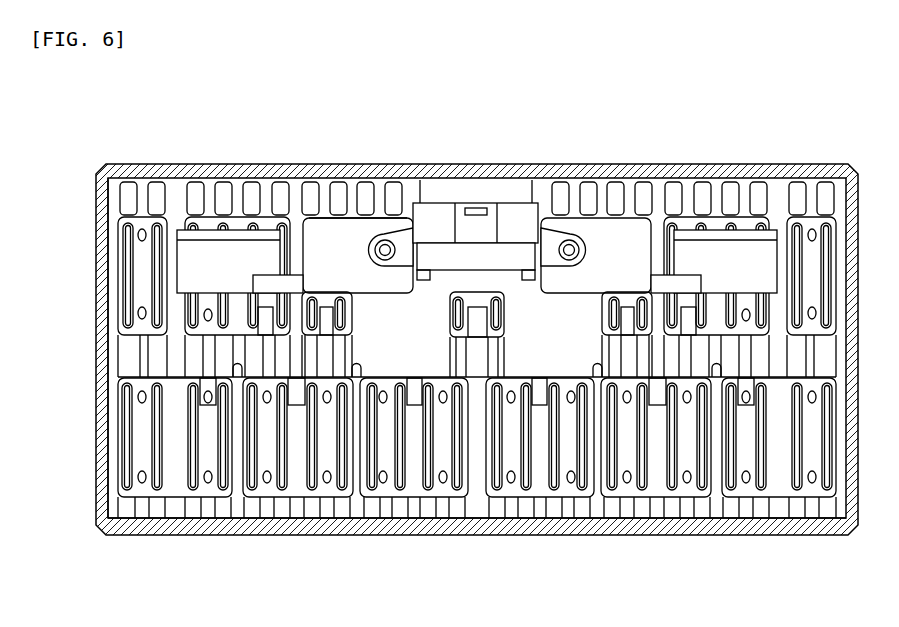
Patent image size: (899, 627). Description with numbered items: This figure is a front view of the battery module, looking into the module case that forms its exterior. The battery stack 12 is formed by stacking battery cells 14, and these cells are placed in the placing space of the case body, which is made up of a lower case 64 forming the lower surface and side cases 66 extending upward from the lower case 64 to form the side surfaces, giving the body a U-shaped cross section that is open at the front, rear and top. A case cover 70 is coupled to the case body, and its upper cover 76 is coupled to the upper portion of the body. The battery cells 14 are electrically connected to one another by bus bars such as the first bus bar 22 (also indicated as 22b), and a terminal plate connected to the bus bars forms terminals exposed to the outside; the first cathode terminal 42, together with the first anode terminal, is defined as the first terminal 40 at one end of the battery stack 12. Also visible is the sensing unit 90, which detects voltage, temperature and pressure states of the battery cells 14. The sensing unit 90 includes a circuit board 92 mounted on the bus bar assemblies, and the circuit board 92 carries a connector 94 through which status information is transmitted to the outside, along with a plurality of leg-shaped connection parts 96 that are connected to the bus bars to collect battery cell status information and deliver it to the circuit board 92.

The battery stack 12 is at (763, 172).
The battery cell 14 is at (614, 195).
The first bus bar 22 is at (470, 349).
The cell holder module 22b is at (146, 222).
The first cathode terminal 42 is at (477, 235).
The first terminal 40 is at (264, 235).
The lower case 64 is at (170, 533).
The side case 66 is at (97, 487).
The upper cover 76 is at (476, 186).
The case cover 70 is at (498, 210).
The sensing unit 90 is at (364, 225).
The circuit board 92 is at (330, 273).
The connector 94 is at (522, 220).
The connection part 96 is at (683, 283).